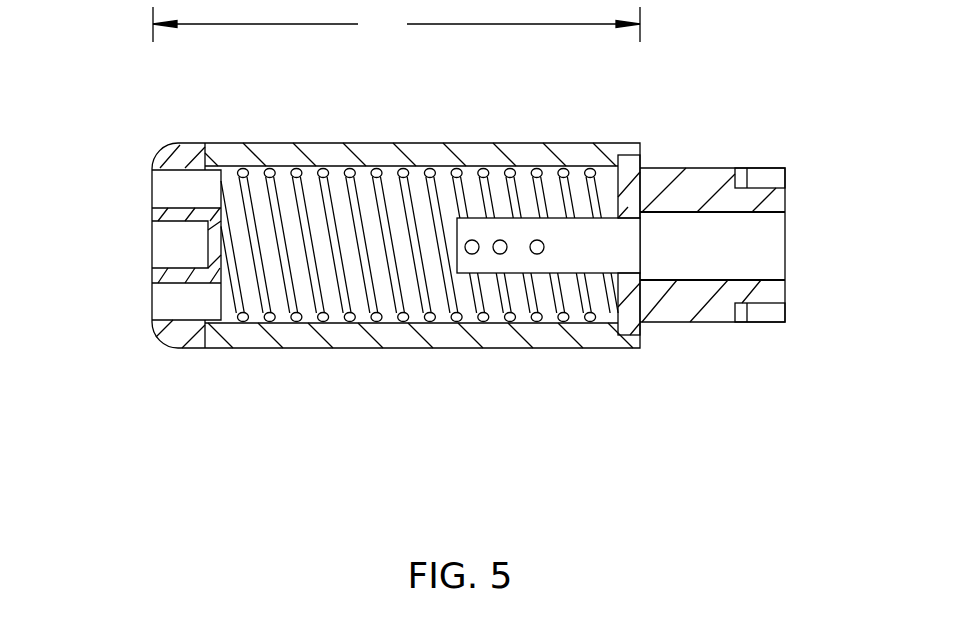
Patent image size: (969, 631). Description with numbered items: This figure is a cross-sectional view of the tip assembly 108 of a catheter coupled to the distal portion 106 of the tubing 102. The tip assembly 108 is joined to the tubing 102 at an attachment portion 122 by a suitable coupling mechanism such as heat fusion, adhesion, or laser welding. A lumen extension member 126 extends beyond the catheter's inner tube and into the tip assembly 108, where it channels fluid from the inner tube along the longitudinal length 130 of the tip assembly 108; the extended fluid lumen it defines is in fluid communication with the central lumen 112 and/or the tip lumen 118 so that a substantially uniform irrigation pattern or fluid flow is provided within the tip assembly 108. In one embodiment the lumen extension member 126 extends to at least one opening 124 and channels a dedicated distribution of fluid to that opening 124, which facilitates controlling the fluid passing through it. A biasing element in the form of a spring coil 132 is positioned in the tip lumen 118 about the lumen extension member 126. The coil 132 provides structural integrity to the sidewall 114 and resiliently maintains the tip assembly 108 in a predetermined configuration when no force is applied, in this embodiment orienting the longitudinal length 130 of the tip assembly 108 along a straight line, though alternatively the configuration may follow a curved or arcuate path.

The tubing 102 is at (763, 170).
The distal portion 106 is at (768, 359).
The tip assembly 108 is at (487, 425).
The central lumen 112 is at (697, 258).
The sidewall 114 is at (423, 143).
The tip lumen 118 is at (252, 320).
The attachment portion 122 is at (640, 156).
The opening 124 is at (118, 260).
The lumen extension member 126 is at (552, 263).
The longitudinal length 130 is at (396, 24).
The spring coil 132 is at (370, 322).